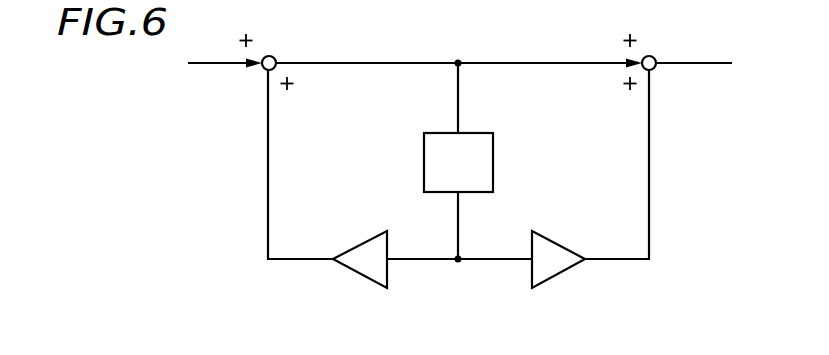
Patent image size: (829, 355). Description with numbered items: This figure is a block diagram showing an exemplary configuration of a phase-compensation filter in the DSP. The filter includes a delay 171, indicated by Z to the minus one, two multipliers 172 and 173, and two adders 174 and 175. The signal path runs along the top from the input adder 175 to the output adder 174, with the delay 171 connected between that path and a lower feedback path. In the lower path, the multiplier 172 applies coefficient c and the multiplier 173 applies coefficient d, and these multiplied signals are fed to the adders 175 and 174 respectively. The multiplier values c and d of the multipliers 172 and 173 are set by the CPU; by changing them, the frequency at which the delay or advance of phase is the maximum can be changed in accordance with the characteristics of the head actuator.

The delay 171 is at (493, 156).
The multiplier 172 is at (358, 273).
The multiplier 173 is at (570, 268).
The adder 174 is at (655, 70).
The adder 175 is at (261, 72).